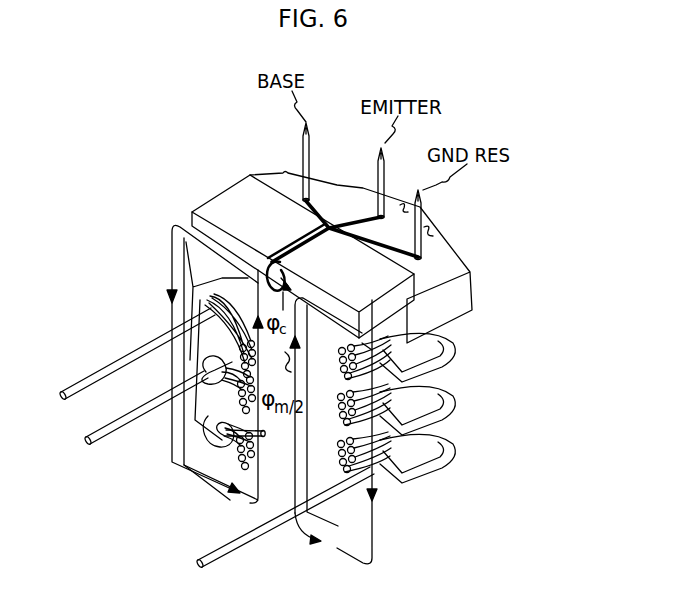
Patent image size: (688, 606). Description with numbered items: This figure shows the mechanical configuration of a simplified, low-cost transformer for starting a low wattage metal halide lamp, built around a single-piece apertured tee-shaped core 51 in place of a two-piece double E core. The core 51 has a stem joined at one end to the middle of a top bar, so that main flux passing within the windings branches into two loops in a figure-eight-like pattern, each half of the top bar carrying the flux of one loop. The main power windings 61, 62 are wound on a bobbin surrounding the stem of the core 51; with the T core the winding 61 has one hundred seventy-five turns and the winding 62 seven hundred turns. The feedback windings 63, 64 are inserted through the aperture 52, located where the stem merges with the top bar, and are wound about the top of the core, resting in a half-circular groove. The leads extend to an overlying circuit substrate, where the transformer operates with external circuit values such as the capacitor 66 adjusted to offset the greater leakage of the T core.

The tee-shaped core 51 is at (200, 200).
The aperture 52 is at (283, 272).
The main power winding 61 is at (392, 350).
The main power winding 62 is at (385, 447).
The feedback winding 63 is at (427, 247).
The feedback winding 64 is at (318, 212).
The capacitor 66 is at (473, 288).